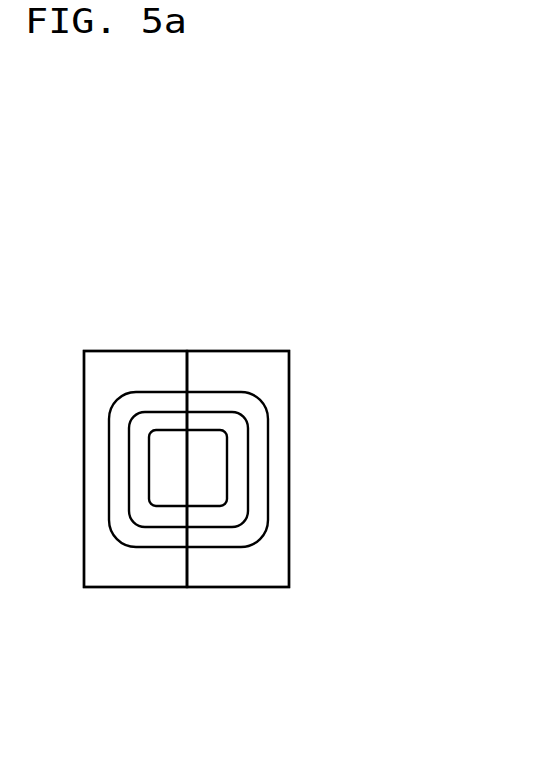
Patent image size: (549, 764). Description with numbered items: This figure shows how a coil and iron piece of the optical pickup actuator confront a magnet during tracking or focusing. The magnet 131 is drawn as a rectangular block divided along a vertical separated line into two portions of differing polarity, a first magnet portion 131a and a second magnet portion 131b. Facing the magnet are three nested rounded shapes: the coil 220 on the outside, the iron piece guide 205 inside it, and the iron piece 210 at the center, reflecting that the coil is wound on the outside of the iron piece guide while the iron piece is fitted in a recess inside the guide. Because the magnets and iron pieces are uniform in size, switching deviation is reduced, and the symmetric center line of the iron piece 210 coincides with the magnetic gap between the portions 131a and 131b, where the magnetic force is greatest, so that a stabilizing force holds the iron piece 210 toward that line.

The first magnet 131 is at (318, 380).
The magnet portion of first magnet 131a is at (137, 573).
The magnet portion of first magnet 131b is at (247, 573).
The iron piece guide 205 is at (158, 420).
The iron piece 210 is at (207, 443).
The coil 220 is at (246, 407).